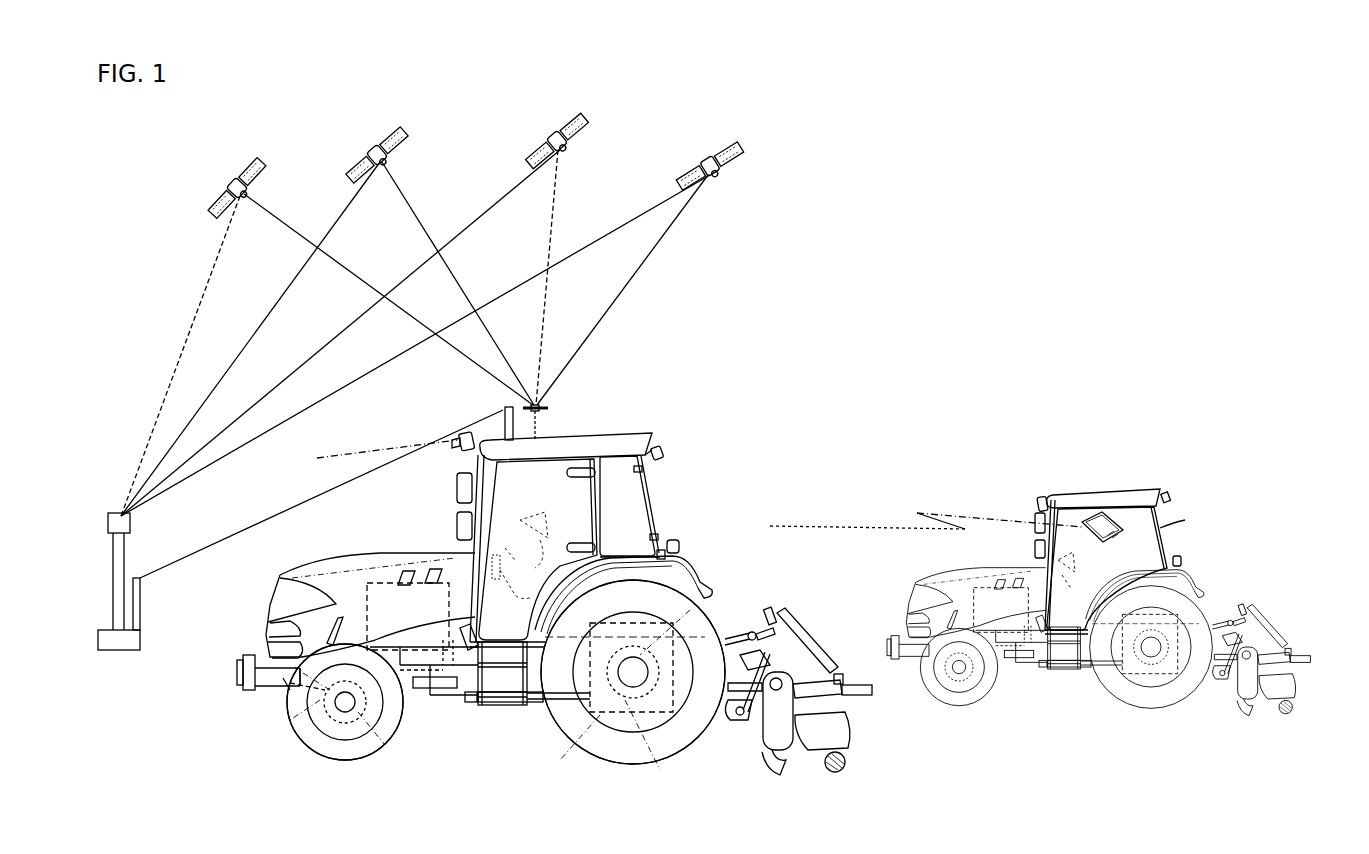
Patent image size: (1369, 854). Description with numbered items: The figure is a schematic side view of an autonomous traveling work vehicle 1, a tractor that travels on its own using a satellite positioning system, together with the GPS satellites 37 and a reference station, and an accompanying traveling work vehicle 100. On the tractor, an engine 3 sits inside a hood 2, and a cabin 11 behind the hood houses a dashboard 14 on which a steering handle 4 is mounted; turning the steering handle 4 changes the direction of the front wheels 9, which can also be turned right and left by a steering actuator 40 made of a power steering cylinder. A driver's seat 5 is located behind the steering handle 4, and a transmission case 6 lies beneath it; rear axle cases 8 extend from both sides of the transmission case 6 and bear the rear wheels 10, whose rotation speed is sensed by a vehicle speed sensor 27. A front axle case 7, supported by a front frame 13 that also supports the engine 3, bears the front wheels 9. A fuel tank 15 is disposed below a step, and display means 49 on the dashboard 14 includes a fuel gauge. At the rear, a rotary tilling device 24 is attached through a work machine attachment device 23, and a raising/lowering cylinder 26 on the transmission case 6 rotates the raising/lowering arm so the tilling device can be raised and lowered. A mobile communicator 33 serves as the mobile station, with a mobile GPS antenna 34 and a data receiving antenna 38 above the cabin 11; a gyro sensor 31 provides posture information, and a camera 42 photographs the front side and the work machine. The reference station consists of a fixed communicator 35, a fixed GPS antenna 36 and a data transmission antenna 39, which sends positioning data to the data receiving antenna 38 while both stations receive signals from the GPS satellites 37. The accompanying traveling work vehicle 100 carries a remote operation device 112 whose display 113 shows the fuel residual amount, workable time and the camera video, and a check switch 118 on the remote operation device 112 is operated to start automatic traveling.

The autonomous traveling work vehicle 1 is at (547, 554).
The hood 2 is at (350, 553).
The engine 3 is at (555, 540).
The steering handle 4 is at (548, 540).
The driver's seat 5 is at (617, 522).
The transmission case 6 is at (795, 667).
The front axle case 7 is at (293, 728).
The rear axle case 8 is at (668, 748).
The front wheel 9 is at (313, 754).
The rear wheel 10 is at (712, 732).
The cabin 11 is at (660, 500).
The front frame 13 is at (288, 682).
The dashboard 14 is at (526, 578).
The fuel tank 15 is at (466, 700).
The work machine attachment device 23 is at (742, 608).
The rotary tilling device 24 is at (811, 616).
The raising/lowering cylinder 26 is at (685, 560).
The vehicle speed sensor 27 is at (606, 712).
The gyro sensor 31 is at (452, 525).
The mobile communicator 33 is at (428, 555).
The mobile GPS antenna 34 is at (548, 404).
The fixed communicator 35 is at (136, 640).
The fixed GPS antenna 36 is at (119, 512).
The GPS satellite 37 is at (234, 184).
The data receiving antenna 38 is at (505, 408).
The data transmission antenna 39 is at (141, 603).
The steering actuator 40 is at (258, 660).
The camera 42 is at (463, 436).
The display means 49 is at (518, 540).
The accompanying traveling work vehicle 100 is at (1098, 528).
The remote operation device 112 is at (1117, 494).
The display 113 is at (1097, 524).
The check switch 118 is at (1162, 527).